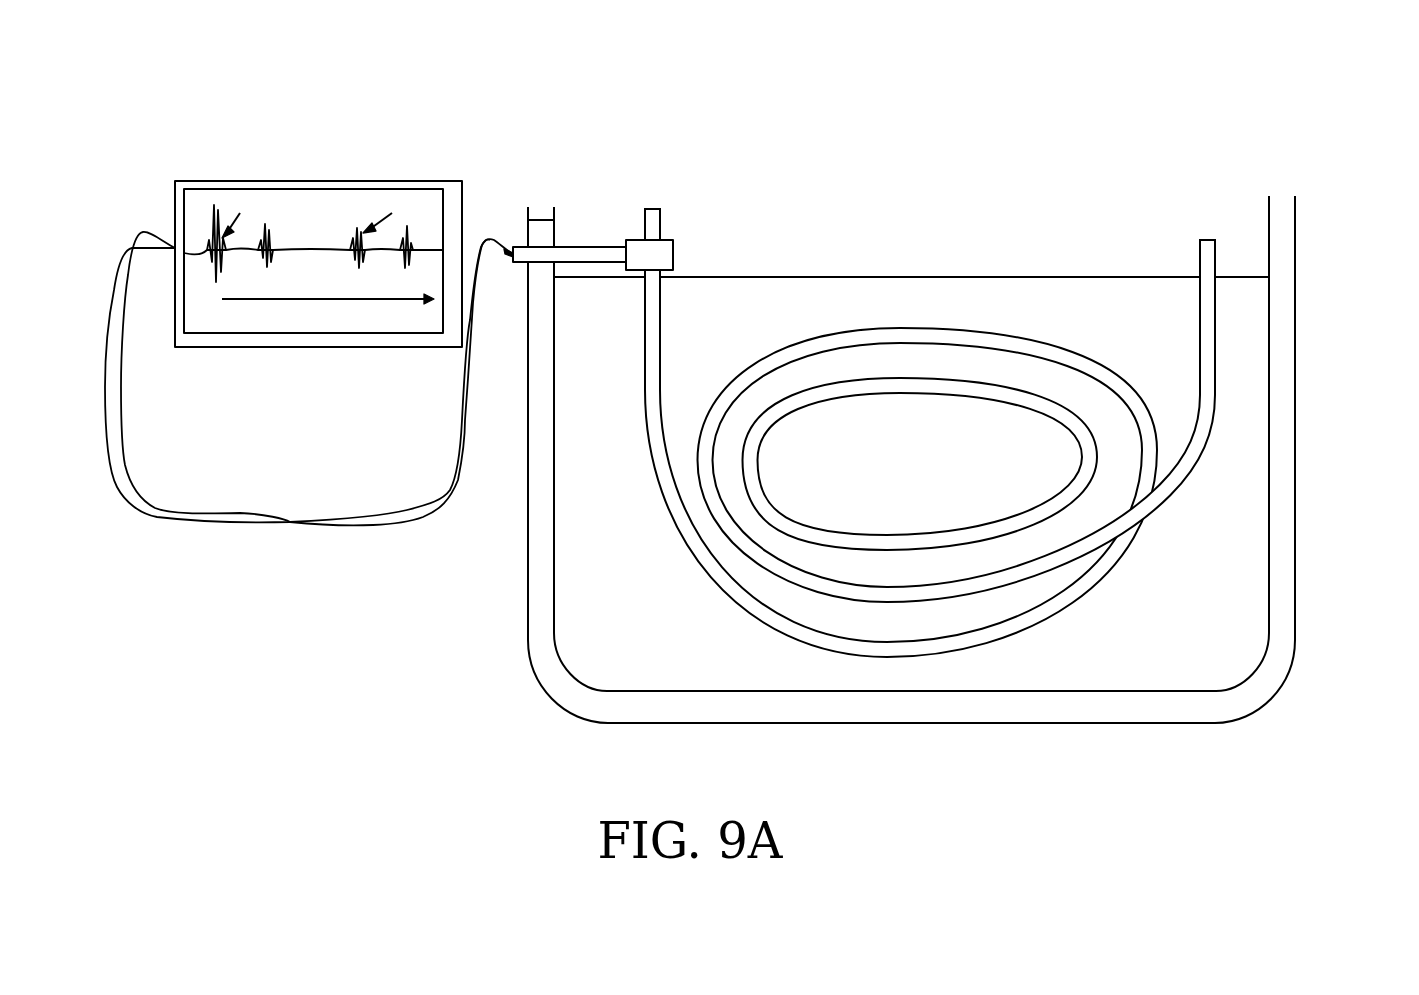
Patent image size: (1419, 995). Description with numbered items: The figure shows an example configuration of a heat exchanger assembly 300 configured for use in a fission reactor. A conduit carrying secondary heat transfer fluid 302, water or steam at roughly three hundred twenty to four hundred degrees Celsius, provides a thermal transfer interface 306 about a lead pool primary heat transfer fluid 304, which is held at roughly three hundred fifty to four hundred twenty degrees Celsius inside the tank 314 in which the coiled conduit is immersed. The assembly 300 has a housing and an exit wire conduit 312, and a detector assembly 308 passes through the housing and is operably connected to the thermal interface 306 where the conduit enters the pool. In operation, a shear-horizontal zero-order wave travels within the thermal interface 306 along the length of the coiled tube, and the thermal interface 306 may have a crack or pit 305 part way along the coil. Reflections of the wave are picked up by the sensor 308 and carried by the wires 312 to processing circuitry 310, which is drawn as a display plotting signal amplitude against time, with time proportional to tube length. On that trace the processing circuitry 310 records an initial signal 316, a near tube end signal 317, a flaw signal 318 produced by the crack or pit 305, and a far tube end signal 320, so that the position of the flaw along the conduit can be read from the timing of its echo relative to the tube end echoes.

The heat exchanger assembly 300 is at (751, 380).
The secondary heat transfer fluid 302 is at (1206, 240).
The lead pool primary heat transfer fluid 304 is at (1242, 460).
The crack or pit 305 is at (758, 463).
The thermal transfer interface 306 is at (653, 226).
The detector assembly 308 is at (660, 252).
The processing circuitry 310 is at (294, 234).
The exit wire conduit 312 is at (130, 503).
The tank 314 is at (1296, 537).
The initial signal 316 is at (214, 200).
The near tube end signal 317 is at (270, 230).
The flaw signal 318 is at (355, 227).
The far tube end signal 320 is at (408, 240).